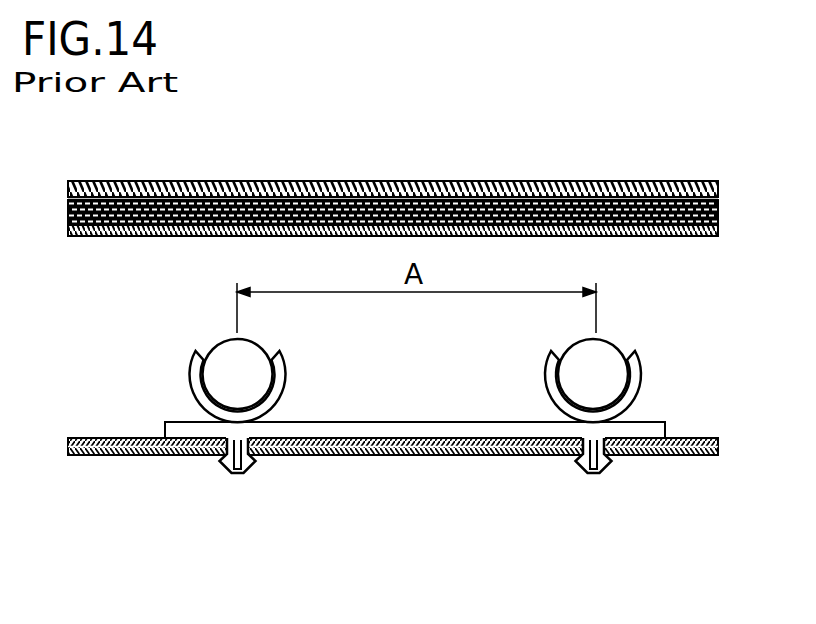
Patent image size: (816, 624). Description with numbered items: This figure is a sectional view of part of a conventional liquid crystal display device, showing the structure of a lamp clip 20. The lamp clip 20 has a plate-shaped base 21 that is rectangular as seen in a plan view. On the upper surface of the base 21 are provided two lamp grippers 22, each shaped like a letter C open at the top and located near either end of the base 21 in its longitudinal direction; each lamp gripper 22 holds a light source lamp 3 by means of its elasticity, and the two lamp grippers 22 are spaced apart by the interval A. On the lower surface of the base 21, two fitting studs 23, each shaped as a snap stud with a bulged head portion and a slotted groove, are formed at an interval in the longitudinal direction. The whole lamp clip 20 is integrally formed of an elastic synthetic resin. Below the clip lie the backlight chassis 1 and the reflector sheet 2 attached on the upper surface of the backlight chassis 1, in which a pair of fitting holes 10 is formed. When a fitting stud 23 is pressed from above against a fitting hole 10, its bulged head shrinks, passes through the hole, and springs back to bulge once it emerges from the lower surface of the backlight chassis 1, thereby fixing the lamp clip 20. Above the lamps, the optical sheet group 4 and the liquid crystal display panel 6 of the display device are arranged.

The backlight chassis 1 is at (132, 455).
The reflector sheet 2 is at (93, 437).
The light source lamp 3 is at (612, 342).
The optical sheet group 4 is at (665, 236).
The liquid crystal display panel 6 is at (665, 181).
The fitting hole 10 is at (628, 455).
The lamp clip 20 is at (422, 354).
The base 21 is at (414, 422).
The lamp gripper 22 is at (642, 375).
The fitting stud 23 is at (590, 475).